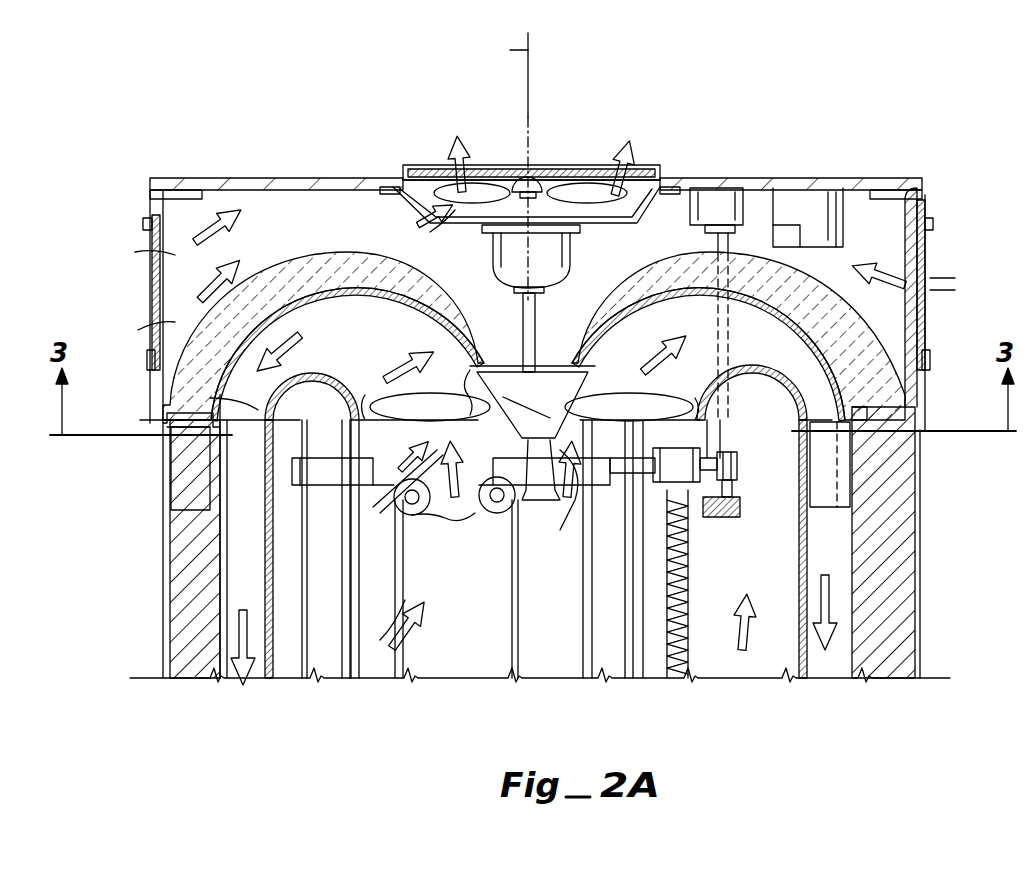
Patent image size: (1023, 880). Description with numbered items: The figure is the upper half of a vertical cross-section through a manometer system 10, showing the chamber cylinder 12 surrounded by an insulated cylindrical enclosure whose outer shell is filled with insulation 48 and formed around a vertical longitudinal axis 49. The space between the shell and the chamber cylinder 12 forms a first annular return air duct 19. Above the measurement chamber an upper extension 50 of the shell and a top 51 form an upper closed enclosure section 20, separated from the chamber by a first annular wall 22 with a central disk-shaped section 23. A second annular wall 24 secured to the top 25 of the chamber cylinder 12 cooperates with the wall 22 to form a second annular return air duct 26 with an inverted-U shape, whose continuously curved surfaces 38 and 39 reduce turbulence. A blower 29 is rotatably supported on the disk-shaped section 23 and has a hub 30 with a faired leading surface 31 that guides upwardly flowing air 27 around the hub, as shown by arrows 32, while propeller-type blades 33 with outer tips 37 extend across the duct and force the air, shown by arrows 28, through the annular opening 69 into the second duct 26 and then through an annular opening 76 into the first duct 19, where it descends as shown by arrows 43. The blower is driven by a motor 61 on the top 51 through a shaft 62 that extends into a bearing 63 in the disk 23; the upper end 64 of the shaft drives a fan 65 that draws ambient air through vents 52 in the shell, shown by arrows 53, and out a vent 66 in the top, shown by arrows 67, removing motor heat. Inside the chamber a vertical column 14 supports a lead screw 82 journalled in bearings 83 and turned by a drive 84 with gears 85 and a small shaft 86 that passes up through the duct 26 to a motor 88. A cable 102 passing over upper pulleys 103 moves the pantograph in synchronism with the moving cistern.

The manometer system 10 is at (905, 127).
The chamber cylinder 12 is at (285, 628).
The vertically elongated column 14 is at (585, 560).
The first annular return air duct 19 is at (232, 512).
The upper closed enclosure section 20 is at (152, 196).
The first annular wall 22 is at (828, 240).
The central disk-shaped section 23 is at (540, 340).
The second annular wall 24 is at (285, 392).
The top of the chamber cylinder 25 is at (250, 442).
The second annular return air duct 26 is at (810, 380).
The upwardly flowing air arrows 27 is at (772, 610).
The upper return air path arrows 28 is at (667, 323).
The blower 29 is at (557, 398).
The hub 30 is at (569, 491).
The faired leading surface 31 is at (580, 385).
The air flow around hub arrows 32 is at (468, 390).
The propeller-type blades 33 is at (420, 418).
The outer tips of the blades 37 is at (355, 395).
The continuously curved surface of first annular wall 38 is at (840, 345).
The continuously curved surface of second annular wall 39 is at (310, 395).
The air path arrows in first duct 43 is at (232, 550).
The insulation 48 is at (283, 275).
The longitudinal axis 49 is at (505, 50).
The upper extension of the outer cylindrical shell 50 is at (167, 427).
The top 51 is at (252, 178).
The vents 52 is at (148, 238).
The ambient air flow arrows 53 is at (215, 250).
The motor 61 is at (508, 240).
The shaft 62 is at (490, 262).
The bearing 63 is at (517, 292).
The upper end of the shaft 64 is at (520, 185).
The fan 65 is at (578, 190).
The vent 66 is at (632, 168).
The exhaust air flow arrows 67 is at (455, 165).
The annular opening 69 is at (367, 492).
The annular opening 76 is at (210, 398).
The lead screw 82 is at (690, 562).
The bearings 83 is at (740, 470).
The drive 84 is at (780, 515).
The gears 85 is at (705, 448).
The shaft 86 is at (716, 248).
The motor 88 is at (750, 195).
The cable 102 is at (414, 568).
The upper pulleys 103 is at (412, 515).